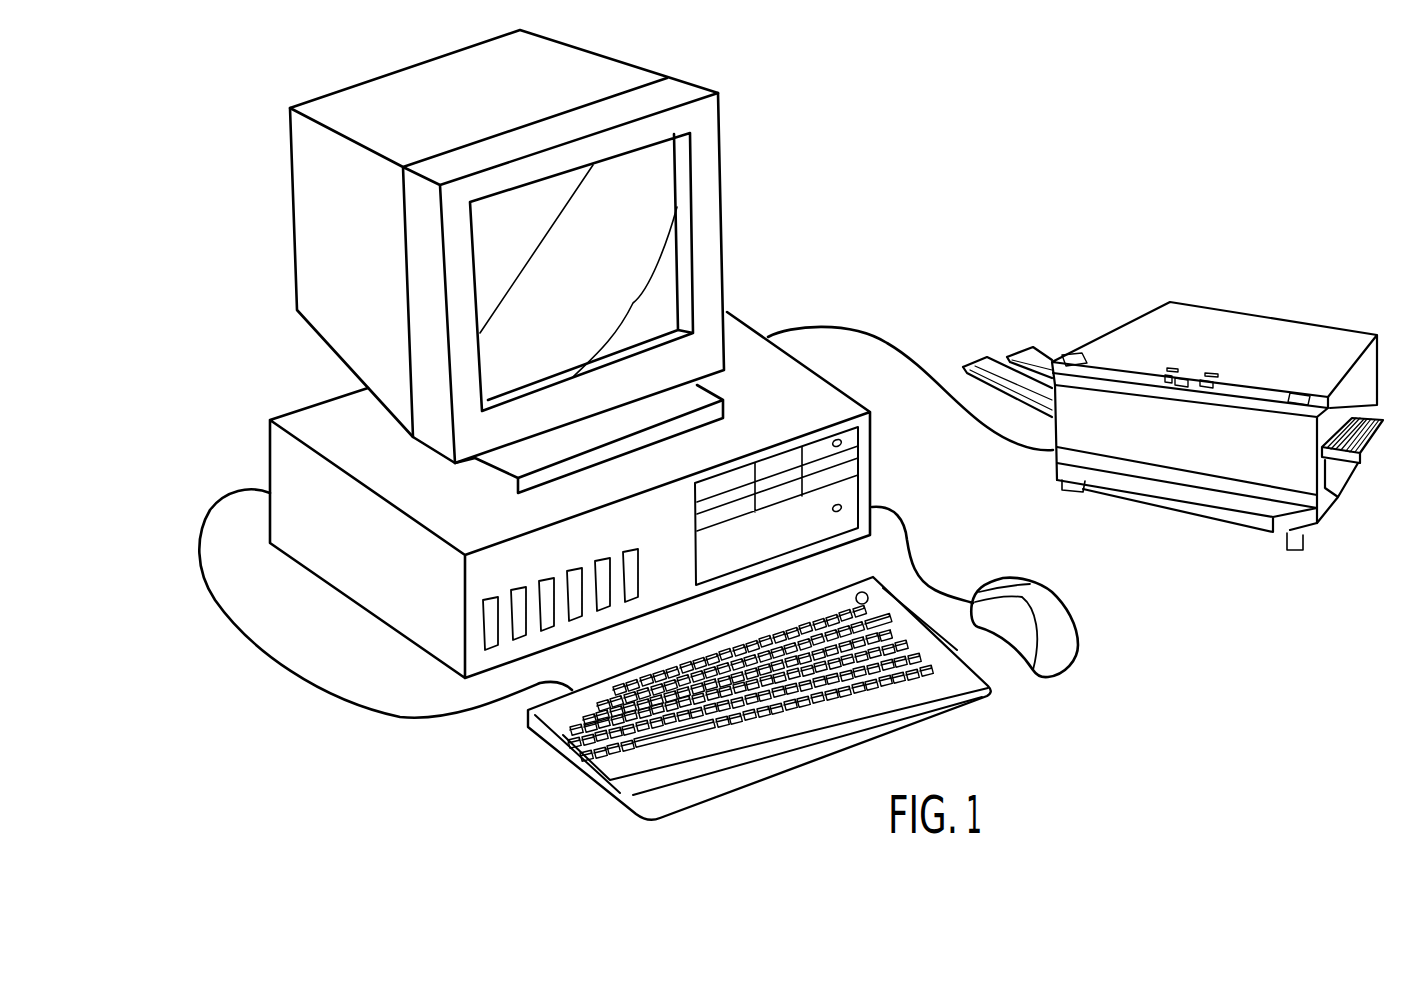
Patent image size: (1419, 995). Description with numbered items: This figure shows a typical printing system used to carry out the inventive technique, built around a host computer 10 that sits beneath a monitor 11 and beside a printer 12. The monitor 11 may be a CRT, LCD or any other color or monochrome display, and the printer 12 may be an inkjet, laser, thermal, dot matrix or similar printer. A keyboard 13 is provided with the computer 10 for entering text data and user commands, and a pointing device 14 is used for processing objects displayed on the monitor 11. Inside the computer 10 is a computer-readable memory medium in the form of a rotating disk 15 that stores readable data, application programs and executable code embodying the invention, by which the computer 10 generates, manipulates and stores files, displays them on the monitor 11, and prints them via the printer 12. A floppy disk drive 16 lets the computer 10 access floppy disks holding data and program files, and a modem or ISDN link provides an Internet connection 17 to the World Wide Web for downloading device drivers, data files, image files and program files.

The host computer 10 is at (872, 216).
The monitor 11 is at (623, 250).
The printer 12 is at (1155, 328).
The keyboard 13 is at (703, 787).
The pointing device 14 is at (1055, 630).
The rotating disk 15 is at (847, 497).
The floppy disk drive 16 is at (827, 477).
The Internet connection 17 is at (270, 458).